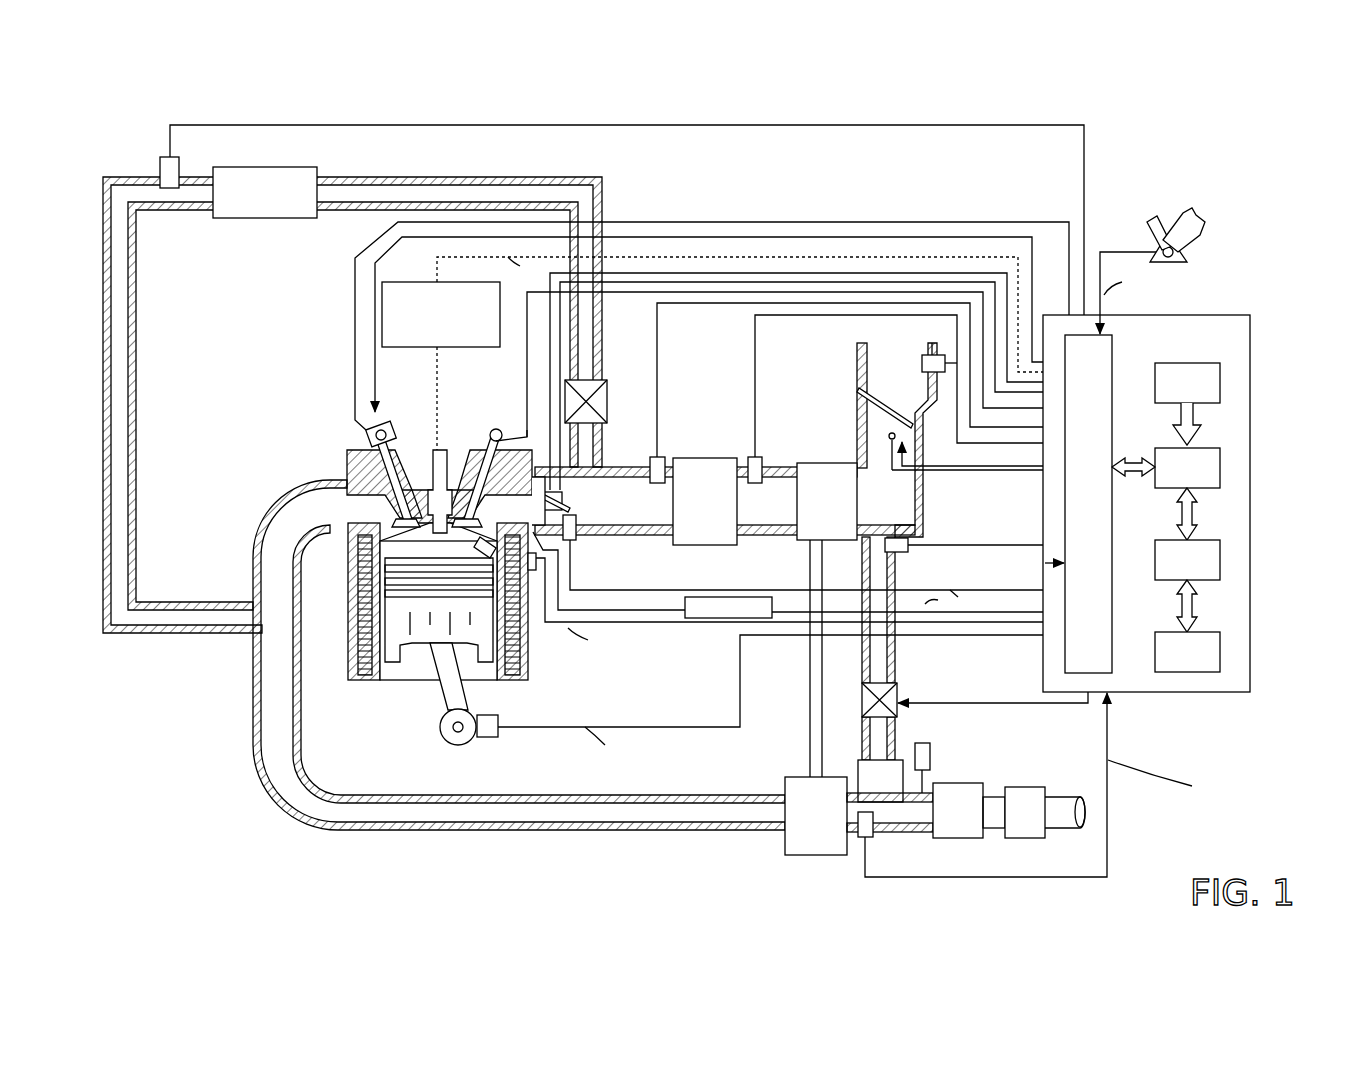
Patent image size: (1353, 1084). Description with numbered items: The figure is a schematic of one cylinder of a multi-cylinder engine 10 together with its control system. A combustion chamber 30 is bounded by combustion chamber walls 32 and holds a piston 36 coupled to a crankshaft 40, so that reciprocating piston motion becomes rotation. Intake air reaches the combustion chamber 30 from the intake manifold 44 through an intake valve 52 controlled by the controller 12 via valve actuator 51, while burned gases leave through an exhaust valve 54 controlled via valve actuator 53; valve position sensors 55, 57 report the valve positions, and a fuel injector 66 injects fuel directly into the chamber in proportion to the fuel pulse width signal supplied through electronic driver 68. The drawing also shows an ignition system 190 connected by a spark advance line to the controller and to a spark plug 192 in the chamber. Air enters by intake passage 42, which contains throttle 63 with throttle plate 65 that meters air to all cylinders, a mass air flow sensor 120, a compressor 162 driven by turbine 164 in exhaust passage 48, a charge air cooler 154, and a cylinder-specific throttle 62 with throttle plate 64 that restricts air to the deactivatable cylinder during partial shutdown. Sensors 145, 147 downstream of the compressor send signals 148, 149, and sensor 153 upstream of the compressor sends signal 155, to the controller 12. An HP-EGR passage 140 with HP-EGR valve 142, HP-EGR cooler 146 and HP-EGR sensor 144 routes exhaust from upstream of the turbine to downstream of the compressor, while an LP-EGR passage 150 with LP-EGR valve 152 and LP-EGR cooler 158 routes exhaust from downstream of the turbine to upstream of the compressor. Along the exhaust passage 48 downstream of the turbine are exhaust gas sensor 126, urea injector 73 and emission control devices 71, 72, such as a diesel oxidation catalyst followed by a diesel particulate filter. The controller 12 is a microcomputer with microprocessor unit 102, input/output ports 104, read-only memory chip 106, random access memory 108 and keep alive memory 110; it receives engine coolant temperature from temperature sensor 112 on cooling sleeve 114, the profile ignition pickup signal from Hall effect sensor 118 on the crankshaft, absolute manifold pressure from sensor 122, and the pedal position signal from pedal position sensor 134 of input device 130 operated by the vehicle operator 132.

The engine 10 is at (397, 551).
The controller 12 is at (1250, 315).
The combustion chamber 30 is at (410, 545).
The combustion chamber walls 32 is at (380, 690).
The piston 36 is at (425, 645).
The crankshaft 40 is at (462, 745).
The intake passage 42 is at (907, 388).
The intake manifold 44 is at (646, 506).
The exhaust passage 48 is at (333, 515).
The valve actuator 51 is at (496, 429).
The intake valve 52 is at (480, 505).
The valve actuator 53 is at (388, 425).
The exhaust valve 54 is at (355, 475).
The valve position sensor 55 is at (497, 429).
The valve position sensor 57 is at (368, 428).
The throttle 62 is at (560, 494).
The throttle 63 is at (857, 392).
The throttle plate 64 is at (568, 505).
The throttle plate 65 is at (870, 420).
The fuel injector 66 is at (474, 545).
The electronic driver 68 is at (772, 606).
The emission control device 71 is at (970, 820).
The emission control device 72 is at (1038, 820).
The urea injector 73 is at (931, 760).
The microprocessor unit 102 is at (1220, 470).
The input/output ports 104 is at (1115, 340).
The read-only memory chip 106 is at (1220, 375).
The random access memory 108 is at (1220, 560).
The keep alive memory 110 is at (1220, 652).
The temperature sensor 112 is at (534, 572).
The cooling sleeve 114 is at (528, 665).
The Hall effect sensor 118 is at (495, 740).
The mass air flow sensor 120 is at (930, 355).
The manifold pressure sensor 122 is at (570, 540).
The exhaust gas sensor 126 is at (870, 838).
The input device 130 is at (1150, 232).
The vehicle operator 132 is at (1200, 215).
The pedal position sensor 134 is at (1185, 258).
The HP-EGR passage 140 is at (505, 178).
The HP-EGR valve 142 is at (598, 400).
The HP-EGR sensor 144 is at (163, 158).
The sensor 145 is at (757, 457).
The HP-EGR cooler 146 is at (284, 200).
The sensor 147 is at (658, 457).
The signal 148 is at (755, 372).
The signal 149 is at (657, 370).
The LP-EGR passage 150 is at (897, 650).
The LP-EGR valve 152 is at (860, 700).
The sensor 153 is at (890, 538).
The charge air cooler 154 is at (722, 506).
The signal 155 is at (948, 545).
The LP-EGR cooler 158 is at (897, 788).
The compressor 162 is at (844, 506).
The turbine 164 is at (833, 823).
The ignition system 190 is at (395, 282).
The spark plug 192 is at (432, 450).